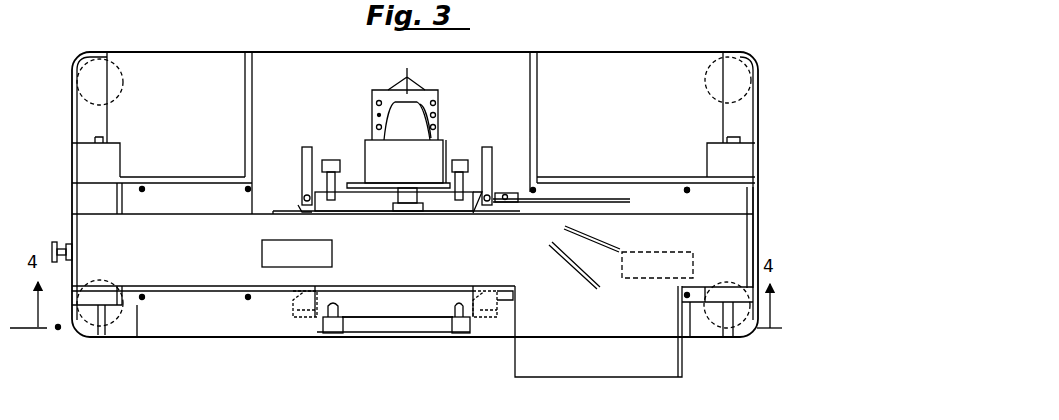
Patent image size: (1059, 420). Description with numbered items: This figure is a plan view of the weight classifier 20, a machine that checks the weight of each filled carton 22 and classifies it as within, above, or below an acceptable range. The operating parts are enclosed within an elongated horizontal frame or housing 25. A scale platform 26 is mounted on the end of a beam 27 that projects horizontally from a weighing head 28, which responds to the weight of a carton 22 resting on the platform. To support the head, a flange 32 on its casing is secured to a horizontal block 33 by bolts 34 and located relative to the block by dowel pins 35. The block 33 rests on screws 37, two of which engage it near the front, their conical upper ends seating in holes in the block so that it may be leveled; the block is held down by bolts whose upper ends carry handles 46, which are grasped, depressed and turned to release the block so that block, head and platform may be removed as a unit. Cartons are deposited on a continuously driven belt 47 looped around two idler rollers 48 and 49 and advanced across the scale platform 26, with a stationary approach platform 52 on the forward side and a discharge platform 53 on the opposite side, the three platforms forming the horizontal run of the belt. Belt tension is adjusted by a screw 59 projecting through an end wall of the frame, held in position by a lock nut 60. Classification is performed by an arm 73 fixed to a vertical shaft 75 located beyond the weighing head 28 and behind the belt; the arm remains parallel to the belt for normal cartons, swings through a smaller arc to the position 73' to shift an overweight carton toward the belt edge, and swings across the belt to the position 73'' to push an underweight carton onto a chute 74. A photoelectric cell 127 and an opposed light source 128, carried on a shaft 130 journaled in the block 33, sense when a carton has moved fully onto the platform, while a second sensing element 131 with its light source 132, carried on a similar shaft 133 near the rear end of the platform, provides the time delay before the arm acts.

The weight classifier 20 is at (589, 44).
The carton 22 is at (262, 252).
The frame or housing 25 is at (72, 124).
The scale platform 26 is at (292, 212).
The beam 27 is at (398, 198).
The weighing head 28 is at (365, 150).
The flange 32 is at (378, 108).
The horizontal block 33 is at (380, 90).
The bolts 34 is at (436, 103).
The dowel pins 35 is at (436, 115).
The screws 37 is at (411, 88).
The handle 46 is at (307, 150).
The belt 47 is at (219, 224).
The idler roller 48 is at (83, 203).
The idler roller 49 is at (720, 205).
The approach platform 52 is at (183, 297).
The discharge platform 53 is at (673, 197).
The screw 59 is at (52, 246).
The lock nut 60 is at (69, 243).
The arm 73 is at (576, 204).
The arm position 73' is at (592, 248).
The arm position 73'' is at (574, 278).
The chute 74 is at (660, 375).
The vertical shaft 75 is at (503, 203).
The photoelectric cell 127 is at (335, 201).
The light source 128 is at (340, 300).
The shaft 130 is at (342, 333).
The second sensing element 131 is at (457, 200).
The light source 132 is at (455, 308).
The shaft 133 is at (452, 333).